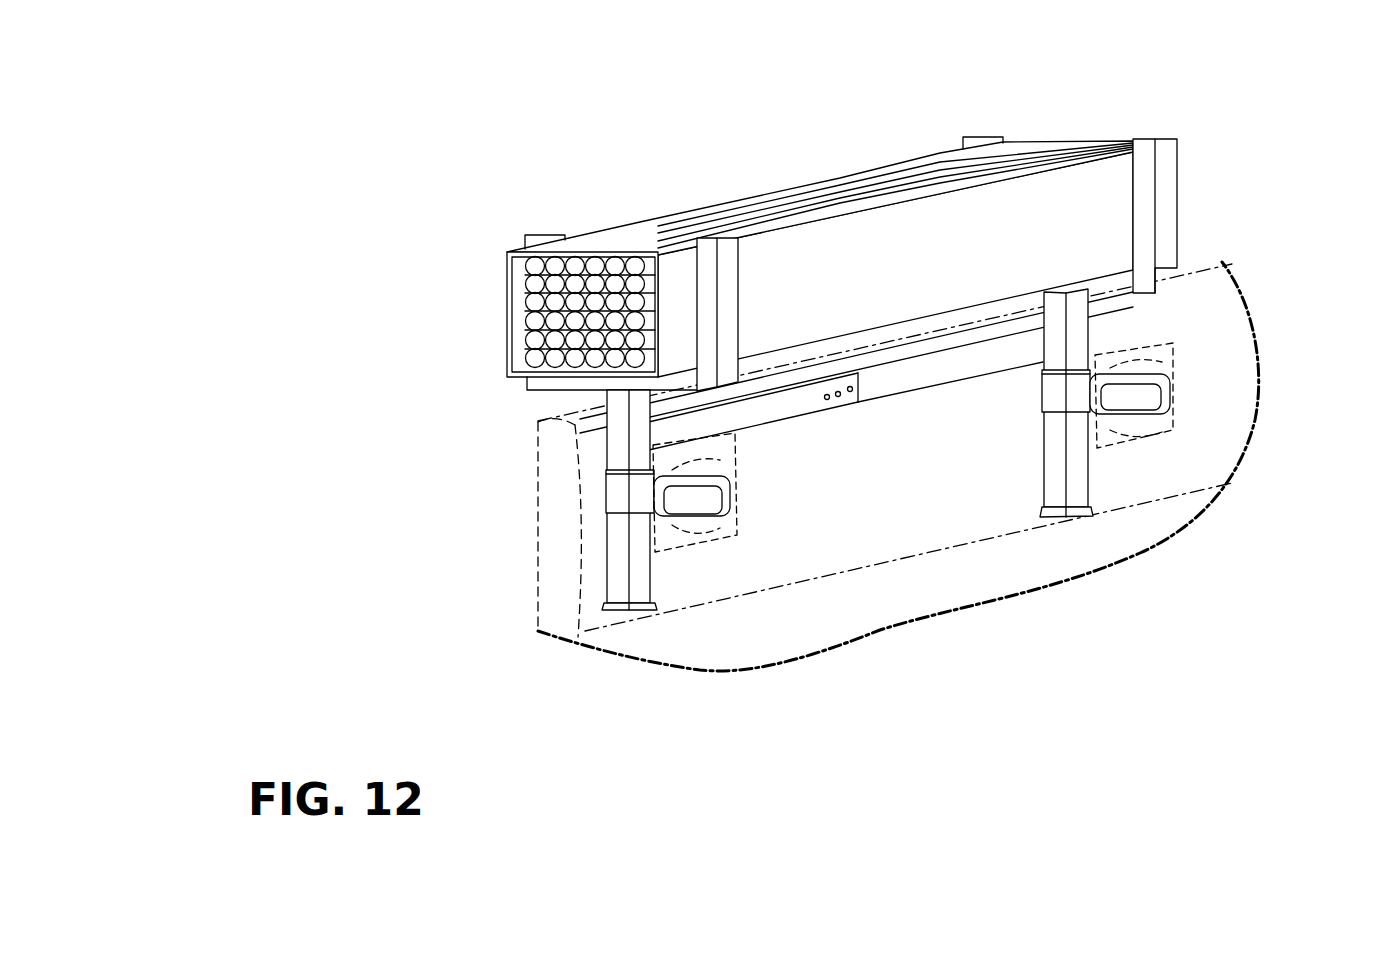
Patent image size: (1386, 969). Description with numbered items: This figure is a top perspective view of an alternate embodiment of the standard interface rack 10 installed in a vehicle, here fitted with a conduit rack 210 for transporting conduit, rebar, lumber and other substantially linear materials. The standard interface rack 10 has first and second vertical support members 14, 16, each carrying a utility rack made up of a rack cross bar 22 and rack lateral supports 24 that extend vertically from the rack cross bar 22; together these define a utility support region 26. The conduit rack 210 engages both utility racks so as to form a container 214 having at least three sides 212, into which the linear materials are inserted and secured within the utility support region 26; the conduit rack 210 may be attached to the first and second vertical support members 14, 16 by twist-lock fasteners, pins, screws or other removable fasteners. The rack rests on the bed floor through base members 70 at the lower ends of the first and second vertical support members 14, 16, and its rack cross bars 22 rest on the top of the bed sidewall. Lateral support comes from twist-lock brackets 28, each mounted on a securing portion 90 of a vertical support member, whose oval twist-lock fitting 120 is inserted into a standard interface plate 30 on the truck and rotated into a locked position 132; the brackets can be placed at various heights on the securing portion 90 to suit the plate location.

The standard interface rack 10 is at (847, 362).
The first vertical support member 14 is at (608, 453).
The second vertical support member 16 is at (1082, 464).
The rack cross bar 22 is at (1138, 283).
The rack lateral support 24 is at (1172, 205).
The utility support region 26 is at (775, 200).
The twist-lock bracket 28 is at (1047, 393).
The standard interface plate 30 is at (720, 458).
The base member 70 is at (1062, 520).
The securing portion 90 is at (608, 518).
The twist-lock fitting 120 is at (713, 488).
The locked position 132 is at (750, 537).
The conduit rack 210 is at (820, 222).
The sides 212 is at (1073, 140).
The container 214 is at (852, 240).